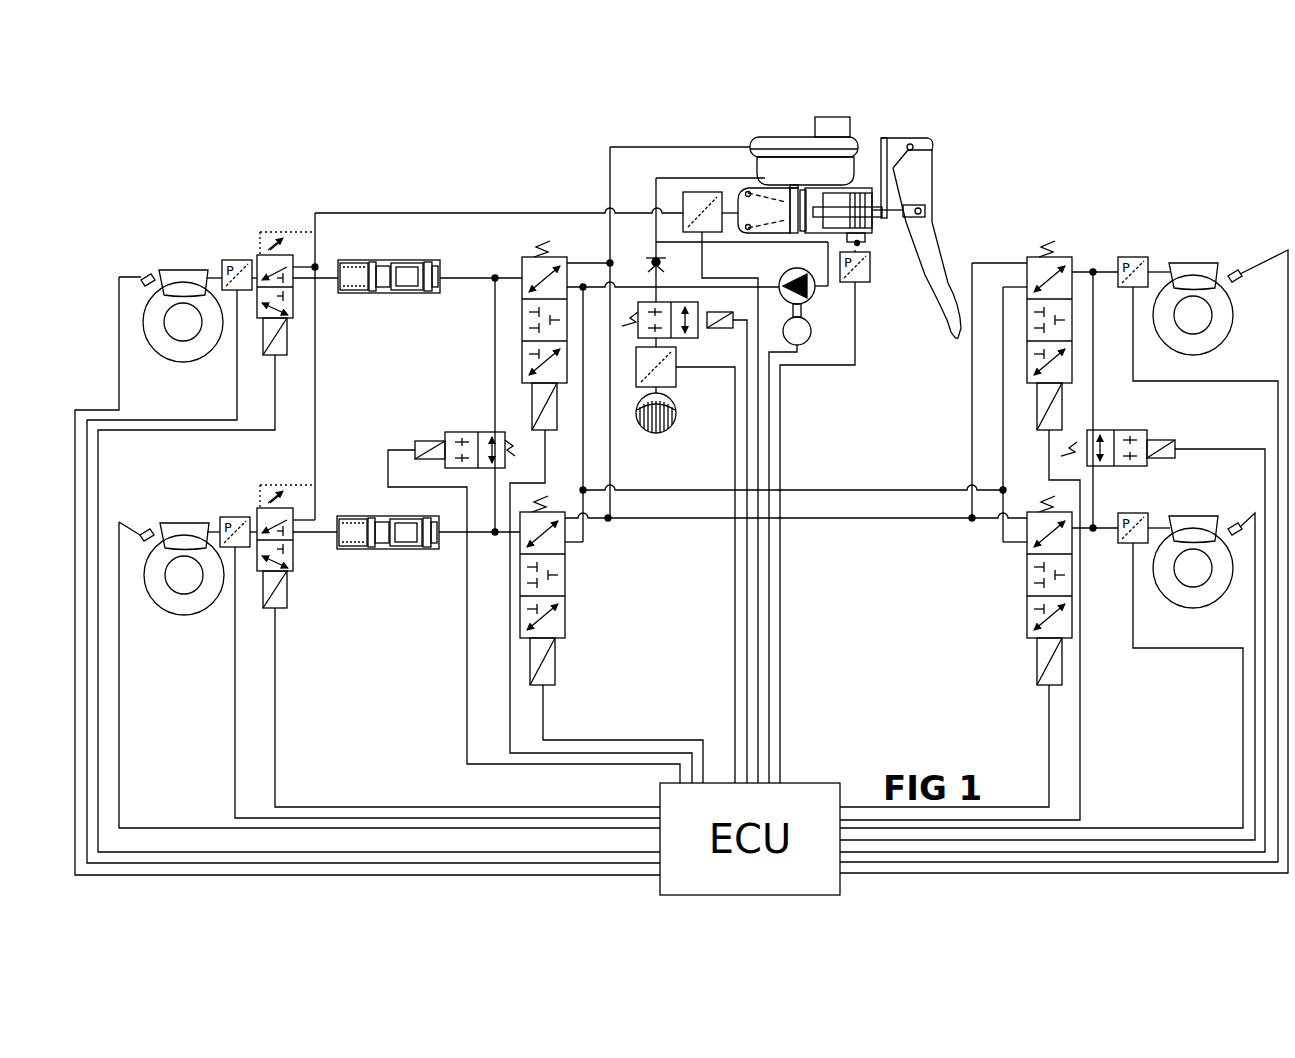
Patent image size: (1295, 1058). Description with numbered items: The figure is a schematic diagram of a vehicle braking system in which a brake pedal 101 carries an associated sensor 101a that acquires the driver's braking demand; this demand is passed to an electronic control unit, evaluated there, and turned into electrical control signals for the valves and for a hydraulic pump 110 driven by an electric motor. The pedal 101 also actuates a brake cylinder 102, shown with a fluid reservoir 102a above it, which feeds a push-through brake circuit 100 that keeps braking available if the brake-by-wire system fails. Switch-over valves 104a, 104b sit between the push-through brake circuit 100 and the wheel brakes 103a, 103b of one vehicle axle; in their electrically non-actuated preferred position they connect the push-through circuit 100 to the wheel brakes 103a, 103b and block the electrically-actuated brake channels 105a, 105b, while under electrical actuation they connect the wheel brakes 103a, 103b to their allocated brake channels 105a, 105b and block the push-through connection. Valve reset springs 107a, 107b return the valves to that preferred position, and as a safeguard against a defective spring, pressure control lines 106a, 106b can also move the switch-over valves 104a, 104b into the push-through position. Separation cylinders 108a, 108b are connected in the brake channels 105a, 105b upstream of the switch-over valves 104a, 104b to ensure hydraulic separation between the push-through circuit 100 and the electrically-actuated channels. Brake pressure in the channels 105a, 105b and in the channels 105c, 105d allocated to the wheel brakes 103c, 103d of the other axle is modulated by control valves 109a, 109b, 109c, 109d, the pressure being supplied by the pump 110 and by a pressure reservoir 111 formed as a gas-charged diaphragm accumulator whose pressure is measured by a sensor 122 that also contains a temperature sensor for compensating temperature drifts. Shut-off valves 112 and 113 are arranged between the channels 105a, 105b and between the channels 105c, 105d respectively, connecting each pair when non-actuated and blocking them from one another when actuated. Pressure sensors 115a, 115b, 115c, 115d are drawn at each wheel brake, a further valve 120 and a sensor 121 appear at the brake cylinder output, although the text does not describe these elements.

The push-through brake circuit 100 is at (482, 213).
The brake pedal 101 is at (955, 241).
The sensor 101a is at (877, 273).
The brake cylinder 102 is at (745, 200).
The fluid reservoir 102a is at (772, 142).
The wheel brake 103a is at (175, 270).
The wheel brake 103b is at (176, 528).
The wheel brake 103c is at (1192, 516).
The wheel brake 103d is at (1192, 263).
The switch-over valve 104a is at (296, 308).
The switch-over valve 104b is at (293, 565).
The electrically-actuated brake channel 105a is at (485, 277).
The electrically-actuated brake channel 105b is at (492, 536).
The electrically-actuated brake channel 105c is at (1100, 530).
The electrically-actuated brake channel 105d is at (1092, 270).
The pressure control line 106a is at (270, 232).
The pressure control line 106b is at (284, 485).
The valve reset spring 107a is at (288, 243).
The valve reset spring 107b is at (322, 492).
The separation cylinder 108a is at (395, 293).
The separation cylinder 108b is at (383, 549).
The control valve 109a is at (522, 337).
The control valve 109b is at (565, 573).
The control valve 109c is at (1027, 582).
The control valve 109d is at (1027, 330).
The hydraulic pump 110 is at (812, 299).
The pressure reservoir 111 is at (656, 434).
The shut-off valve 112 is at (462, 433).
The shut-off valve 113 is at (1120, 430).
The front left pressure sensor 115a is at (236, 259).
The rear left pressure sensor 115b is at (235, 516).
The rear right pressure sensor 115c is at (1133, 513).
The front right pressure sensor 115d is at (1130, 257).
The pressure control valve 120 is at (688, 338).
The master cylinder pressure sensor 121 is at (704, 258).
The sensor 122 is at (676, 380).